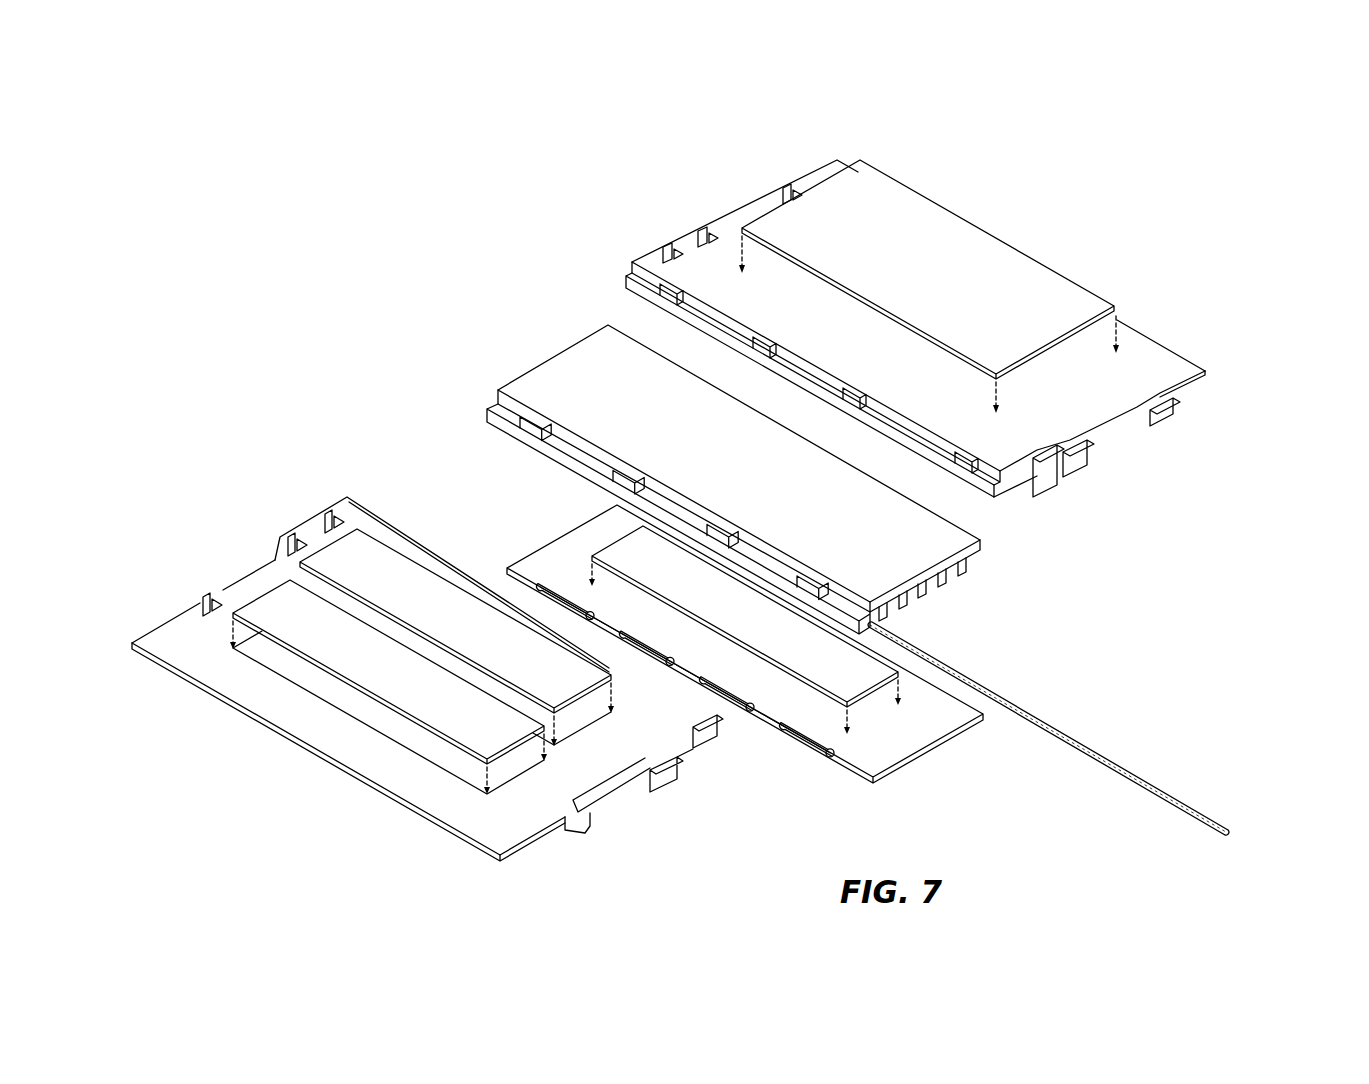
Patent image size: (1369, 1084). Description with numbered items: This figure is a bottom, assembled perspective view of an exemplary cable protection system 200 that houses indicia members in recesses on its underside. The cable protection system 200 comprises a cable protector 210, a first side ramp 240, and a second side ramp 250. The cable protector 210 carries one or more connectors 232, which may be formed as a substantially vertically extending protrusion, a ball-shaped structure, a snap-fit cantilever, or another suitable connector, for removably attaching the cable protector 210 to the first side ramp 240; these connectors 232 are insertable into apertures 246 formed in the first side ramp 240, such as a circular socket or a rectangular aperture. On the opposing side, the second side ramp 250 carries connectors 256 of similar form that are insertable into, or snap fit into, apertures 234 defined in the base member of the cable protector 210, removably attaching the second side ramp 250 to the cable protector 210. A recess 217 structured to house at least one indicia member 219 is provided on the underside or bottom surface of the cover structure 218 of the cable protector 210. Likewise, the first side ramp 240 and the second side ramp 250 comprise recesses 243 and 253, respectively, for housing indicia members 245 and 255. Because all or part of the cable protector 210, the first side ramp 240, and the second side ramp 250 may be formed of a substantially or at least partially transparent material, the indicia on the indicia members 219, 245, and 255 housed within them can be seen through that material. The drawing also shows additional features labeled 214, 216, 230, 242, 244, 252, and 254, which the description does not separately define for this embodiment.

The cable protection system 200 is at (1190, 185).
The cable protector 210 is at (537, 350).
The slot 214 is at (918, 588).
The tooth 216 is at (935, 598).
The recess 217 is at (880, 707).
The cover structure 218 is at (900, 743).
The indicia member 219 is at (766, 622).
The rod 230 is at (1097, 748).
The connector 232 is at (545, 422).
The aperture 234 is at (975, 553).
The first side ramp 240 is at (208, 732).
The tab 242 is at (700, 748).
The recess 243 is at (357, 706).
The tab 244 is at (323, 520).
The indicia member 245 is at (480, 629).
The aperture 246 is at (387, 527).
The second side ramp 250 is at (1062, 262).
The tab 252 is at (1175, 410).
The recess 253 is at (1057, 367).
The tab 254 is at (780, 197).
The indicia member 255 is at (953, 283).
The connector 256 is at (762, 346).